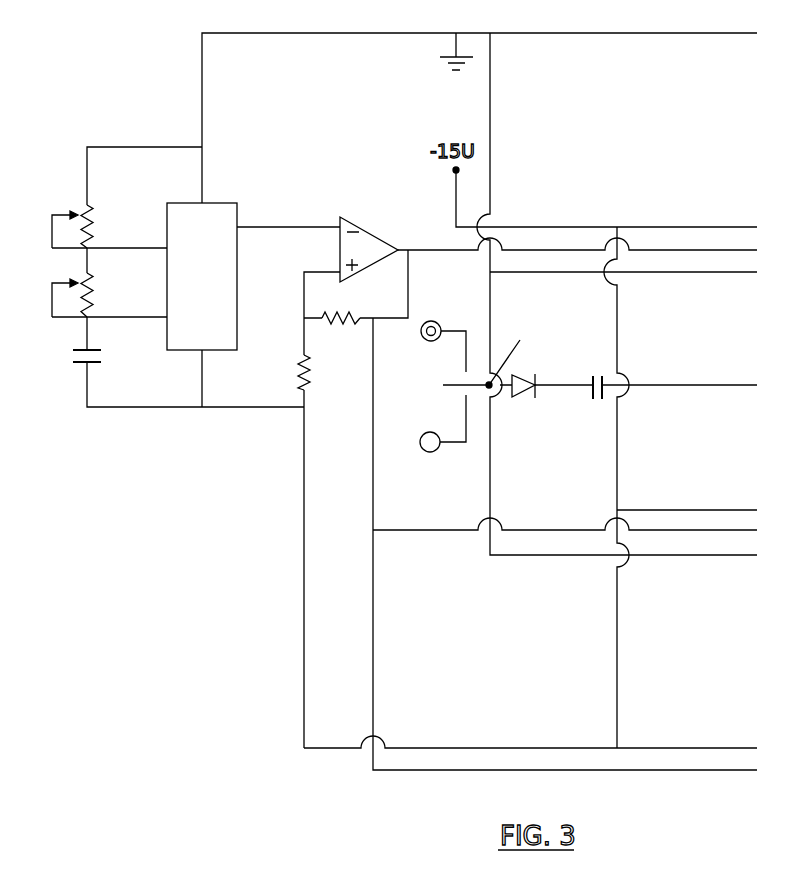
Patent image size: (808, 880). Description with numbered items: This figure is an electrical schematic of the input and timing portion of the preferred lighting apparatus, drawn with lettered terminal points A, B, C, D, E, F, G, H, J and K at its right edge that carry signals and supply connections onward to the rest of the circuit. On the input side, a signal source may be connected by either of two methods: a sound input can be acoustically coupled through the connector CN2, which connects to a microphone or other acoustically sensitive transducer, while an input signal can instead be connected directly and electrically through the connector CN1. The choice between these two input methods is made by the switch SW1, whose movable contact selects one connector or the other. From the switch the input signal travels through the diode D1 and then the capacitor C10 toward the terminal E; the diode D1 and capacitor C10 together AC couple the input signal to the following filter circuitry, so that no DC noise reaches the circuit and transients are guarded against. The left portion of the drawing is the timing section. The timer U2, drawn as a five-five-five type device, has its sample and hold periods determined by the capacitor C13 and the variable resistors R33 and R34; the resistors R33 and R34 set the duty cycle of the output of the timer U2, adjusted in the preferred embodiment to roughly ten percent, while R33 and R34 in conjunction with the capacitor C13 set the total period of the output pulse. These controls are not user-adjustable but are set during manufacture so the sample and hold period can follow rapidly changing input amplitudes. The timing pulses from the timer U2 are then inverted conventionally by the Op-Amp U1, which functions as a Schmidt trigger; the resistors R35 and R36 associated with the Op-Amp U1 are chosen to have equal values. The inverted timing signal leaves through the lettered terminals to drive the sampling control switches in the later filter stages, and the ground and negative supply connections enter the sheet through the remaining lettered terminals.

The timer U2 is at (207, 209).
The variable resistor R33 is at (87, 217).
The variable resistor R34 is at (95, 282).
The capacitor C13 is at (89, 364).
The Op-Amp U1 is at (373, 239).
The resistor R36 is at (345, 317).
The resistor R35 is at (290, 372).
The connector CN1 is at (439, 330).
The connector CN2 is at (428, 435).
The switch SW1 is at (499, 353).
The diode D1 is at (546, 399).
The capacitor C10 is at (655, 387).
The terminal A is at (745, 21).
The terminal B is at (745, 215).
The terminal C is at (745, 238).
The terminal D is at (745, 260).
The terminal E is at (743, 373).
The terminal F is at (743, 498).
The terminal G is at (743, 519).
The terminal H is at (743, 543).
The terminal J is at (741, 736).
The terminal K is at (741, 758).